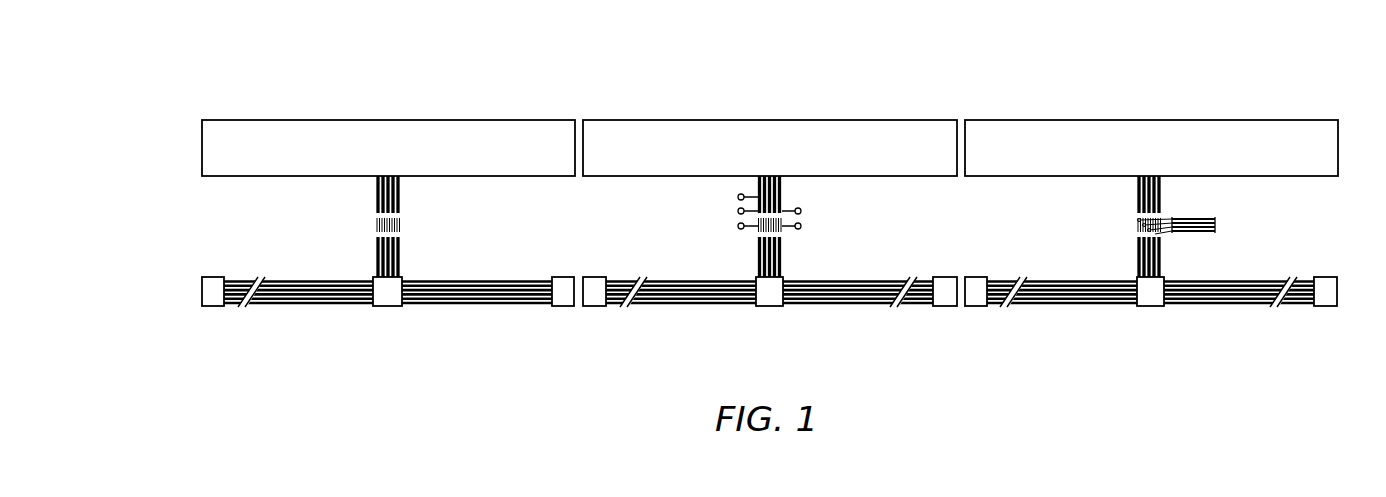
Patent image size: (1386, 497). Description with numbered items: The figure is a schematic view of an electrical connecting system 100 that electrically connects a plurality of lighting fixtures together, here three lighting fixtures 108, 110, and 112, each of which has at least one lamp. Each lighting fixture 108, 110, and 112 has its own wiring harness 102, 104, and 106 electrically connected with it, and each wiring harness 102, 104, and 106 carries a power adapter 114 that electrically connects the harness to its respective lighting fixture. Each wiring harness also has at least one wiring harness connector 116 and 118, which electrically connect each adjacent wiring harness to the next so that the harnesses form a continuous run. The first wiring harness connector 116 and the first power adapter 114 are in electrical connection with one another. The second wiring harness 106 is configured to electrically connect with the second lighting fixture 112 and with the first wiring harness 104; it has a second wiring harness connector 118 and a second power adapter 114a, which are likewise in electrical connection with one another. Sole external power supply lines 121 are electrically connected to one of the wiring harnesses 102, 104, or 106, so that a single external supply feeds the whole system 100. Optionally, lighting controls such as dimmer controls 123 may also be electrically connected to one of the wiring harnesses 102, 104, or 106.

The electrical connecting system 100 is at (990, 345).
The wiring harness 102 is at (453, 298).
The wiring harness 104 is at (710, 298).
The second wiring harness 106 is at (1240, 298).
The lighting fixture 108 is at (402, 120).
The lighting fixture 110 is at (788, 120).
The second lighting fixture 112 is at (1127, 120).
The power adapter 114 is at (380, 306).
The second power adapter 114a is at (1148, 306).
The first wiring harness connector 116 is at (562, 282).
The second wiring harness connector 118 is at (592, 306).
The external power supply lines 121 is at (705, 218).
The dimmer controls 123 is at (832, 218).